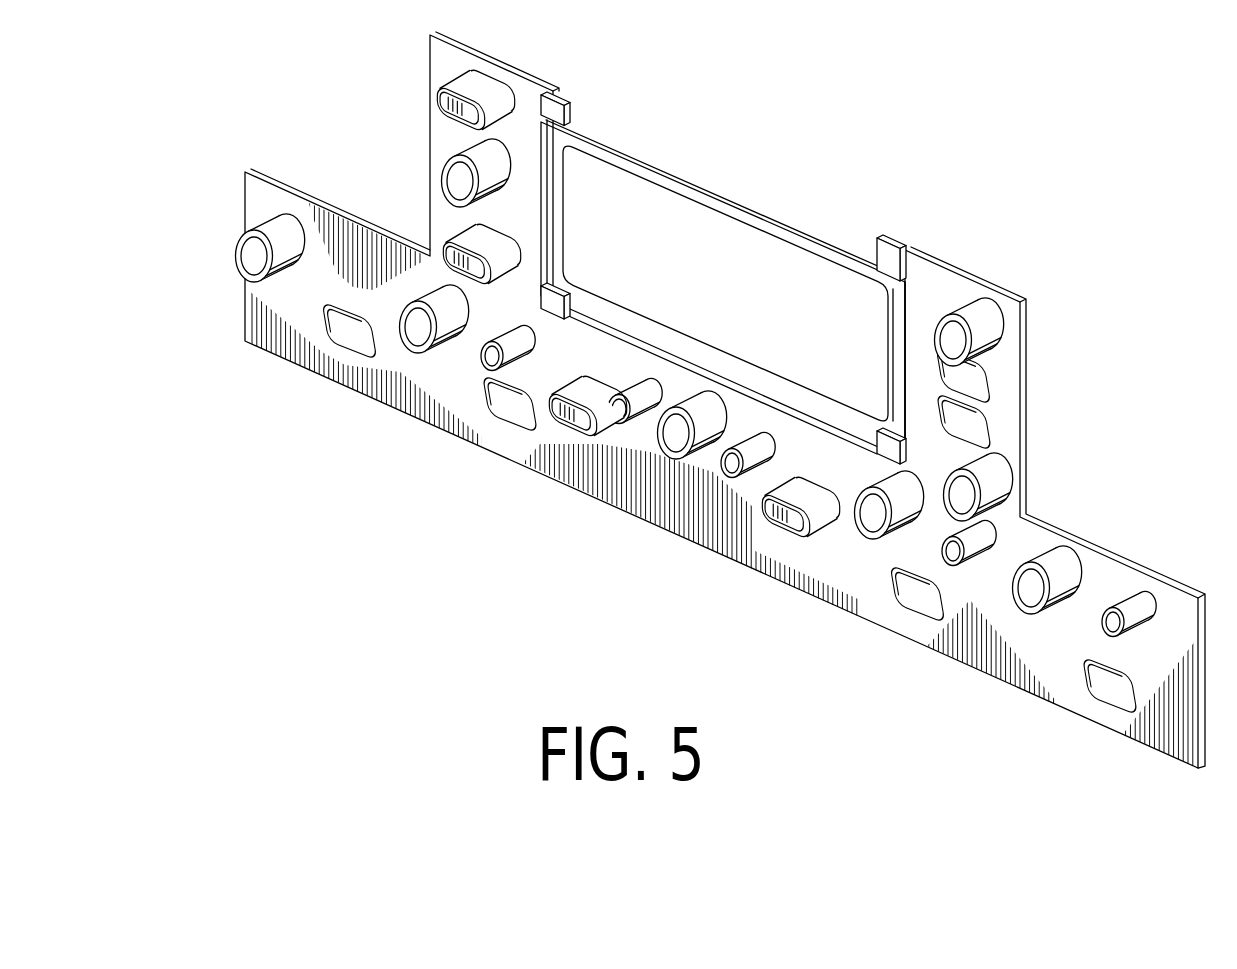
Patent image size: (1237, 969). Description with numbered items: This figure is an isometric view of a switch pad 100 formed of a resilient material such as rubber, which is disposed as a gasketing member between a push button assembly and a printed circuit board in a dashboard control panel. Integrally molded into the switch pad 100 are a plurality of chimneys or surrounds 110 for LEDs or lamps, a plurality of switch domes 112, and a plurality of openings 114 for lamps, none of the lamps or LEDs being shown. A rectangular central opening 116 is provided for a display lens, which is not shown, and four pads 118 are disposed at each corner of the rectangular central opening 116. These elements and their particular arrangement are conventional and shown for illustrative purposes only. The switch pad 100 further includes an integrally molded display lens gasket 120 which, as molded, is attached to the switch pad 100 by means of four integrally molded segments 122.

The switch pad 100 is at (236, 506).
The chimney or surround 110 is at (270, 233).
The switch dome 112 is at (817, 515).
The opening 114 is at (1112, 686).
The rectangular central opening 116 is at (752, 262).
The pad 118 is at (553, 100).
The display lens gasket 120 is at (648, 172).
The integrally molded segment 122 is at (900, 297).